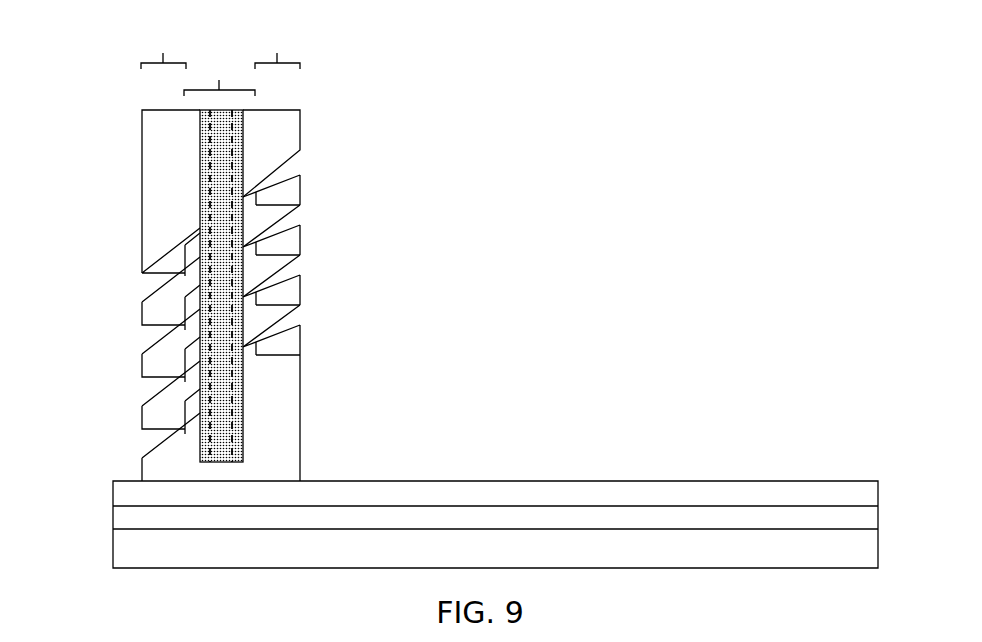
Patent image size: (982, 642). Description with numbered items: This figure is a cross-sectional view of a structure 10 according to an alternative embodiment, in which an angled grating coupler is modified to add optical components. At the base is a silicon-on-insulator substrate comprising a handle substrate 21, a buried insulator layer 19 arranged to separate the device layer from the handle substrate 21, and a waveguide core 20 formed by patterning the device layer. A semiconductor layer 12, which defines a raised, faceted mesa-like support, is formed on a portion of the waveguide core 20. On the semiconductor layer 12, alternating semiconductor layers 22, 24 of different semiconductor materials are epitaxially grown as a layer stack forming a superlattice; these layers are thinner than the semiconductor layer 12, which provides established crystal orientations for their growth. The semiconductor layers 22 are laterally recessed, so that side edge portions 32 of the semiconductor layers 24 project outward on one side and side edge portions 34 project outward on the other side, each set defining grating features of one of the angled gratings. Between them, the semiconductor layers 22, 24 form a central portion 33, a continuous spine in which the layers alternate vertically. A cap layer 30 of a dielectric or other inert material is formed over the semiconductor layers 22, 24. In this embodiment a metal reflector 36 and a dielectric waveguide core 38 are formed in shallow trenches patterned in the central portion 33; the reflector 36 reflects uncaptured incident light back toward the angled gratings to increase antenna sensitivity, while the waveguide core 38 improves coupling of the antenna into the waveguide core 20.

The structure 10 is at (403, 96).
The semiconductor layer 12 is at (192, 437).
The buried insulator layer 19 is at (178, 523).
The waveguide core 20 is at (178, 497).
The handle substrate 21 is at (178, 553).
The semiconductor layers 22 is at (256, 206).
The semiconductor layers 24 is at (185, 275).
The cap layer 30 is at (197, 161).
The side edge portions 32 is at (163, 47).
The central portion 33 is at (219, 73).
The side edge portions 34 is at (271, 111).
The reflector 36 is at (243, 170).
The waveguide core 38 is at (243, 136).